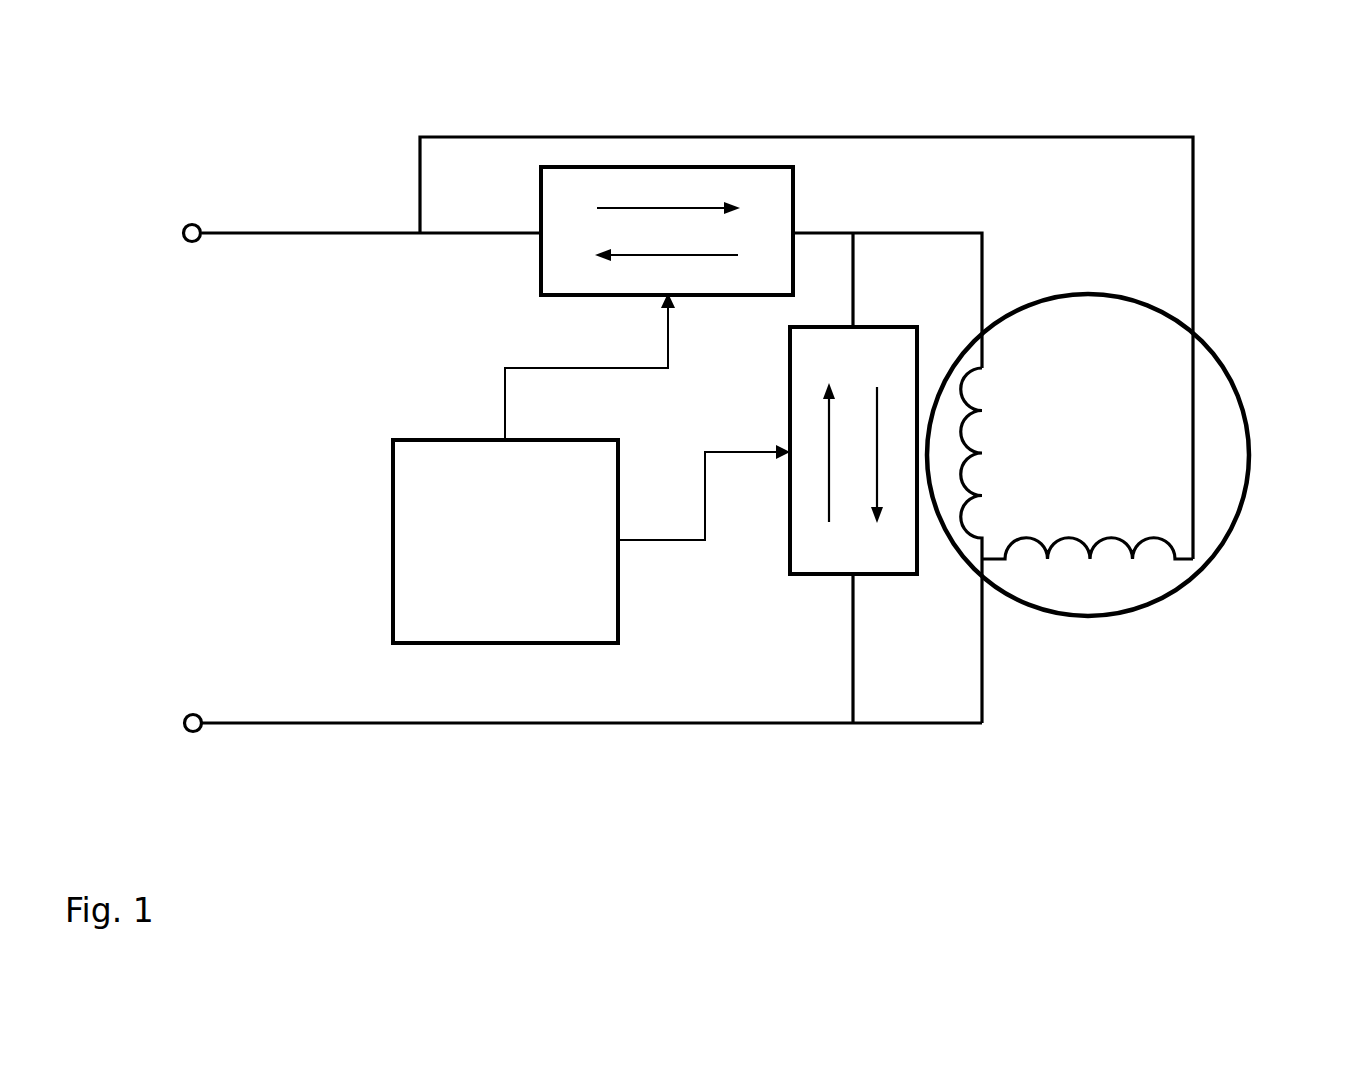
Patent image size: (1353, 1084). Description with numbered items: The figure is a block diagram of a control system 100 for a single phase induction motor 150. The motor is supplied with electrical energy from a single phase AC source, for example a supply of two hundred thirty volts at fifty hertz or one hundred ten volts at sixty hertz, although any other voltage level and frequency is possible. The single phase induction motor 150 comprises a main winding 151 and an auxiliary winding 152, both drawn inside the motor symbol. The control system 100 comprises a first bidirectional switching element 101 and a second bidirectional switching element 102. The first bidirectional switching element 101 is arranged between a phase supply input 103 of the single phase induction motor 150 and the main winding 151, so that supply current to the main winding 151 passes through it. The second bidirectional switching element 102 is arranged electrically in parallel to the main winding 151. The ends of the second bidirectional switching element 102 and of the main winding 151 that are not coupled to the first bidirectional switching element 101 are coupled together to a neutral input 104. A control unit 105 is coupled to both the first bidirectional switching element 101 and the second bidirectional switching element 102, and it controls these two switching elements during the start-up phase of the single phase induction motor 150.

The control system 100 is at (429, 820).
The first bidirectional switching element 101 is at (593, 167).
The second bidirectional switching element 102 is at (830, 576).
The phase supply input 103 is at (192, 222).
The neutral input 104 is at (193, 733).
The control unit 105 is at (588, 645).
The single phase induction motor 150 is at (1080, 295).
The main winding 151 is at (978, 453).
The auxiliary winding 152 is at (1105, 555).